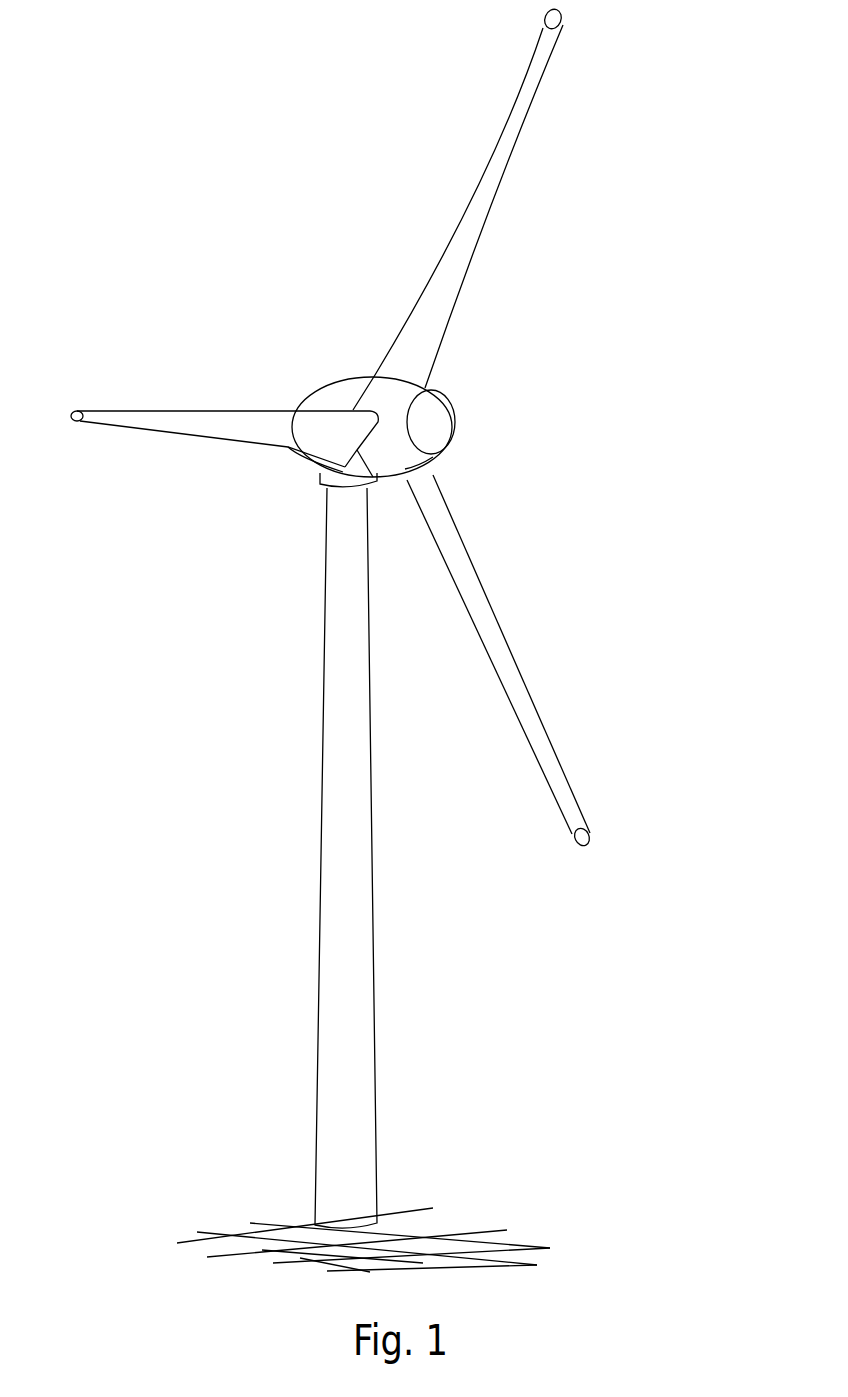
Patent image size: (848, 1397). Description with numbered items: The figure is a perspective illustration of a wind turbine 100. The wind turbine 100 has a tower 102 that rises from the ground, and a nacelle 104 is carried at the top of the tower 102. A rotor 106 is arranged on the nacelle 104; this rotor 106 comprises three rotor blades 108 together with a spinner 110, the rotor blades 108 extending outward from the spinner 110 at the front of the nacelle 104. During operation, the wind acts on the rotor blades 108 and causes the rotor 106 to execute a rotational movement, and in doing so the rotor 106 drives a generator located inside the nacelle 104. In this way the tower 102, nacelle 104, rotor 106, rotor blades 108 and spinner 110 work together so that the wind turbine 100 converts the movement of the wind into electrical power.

The wind turbine 100 is at (270, 572).
The tower 102 is at (353, 972).
The nacelle 104 is at (337, 393).
The rotor 106 is at (540, 330).
The rotor blades 108 is at (502, 153).
The spinner 110 is at (435, 426).